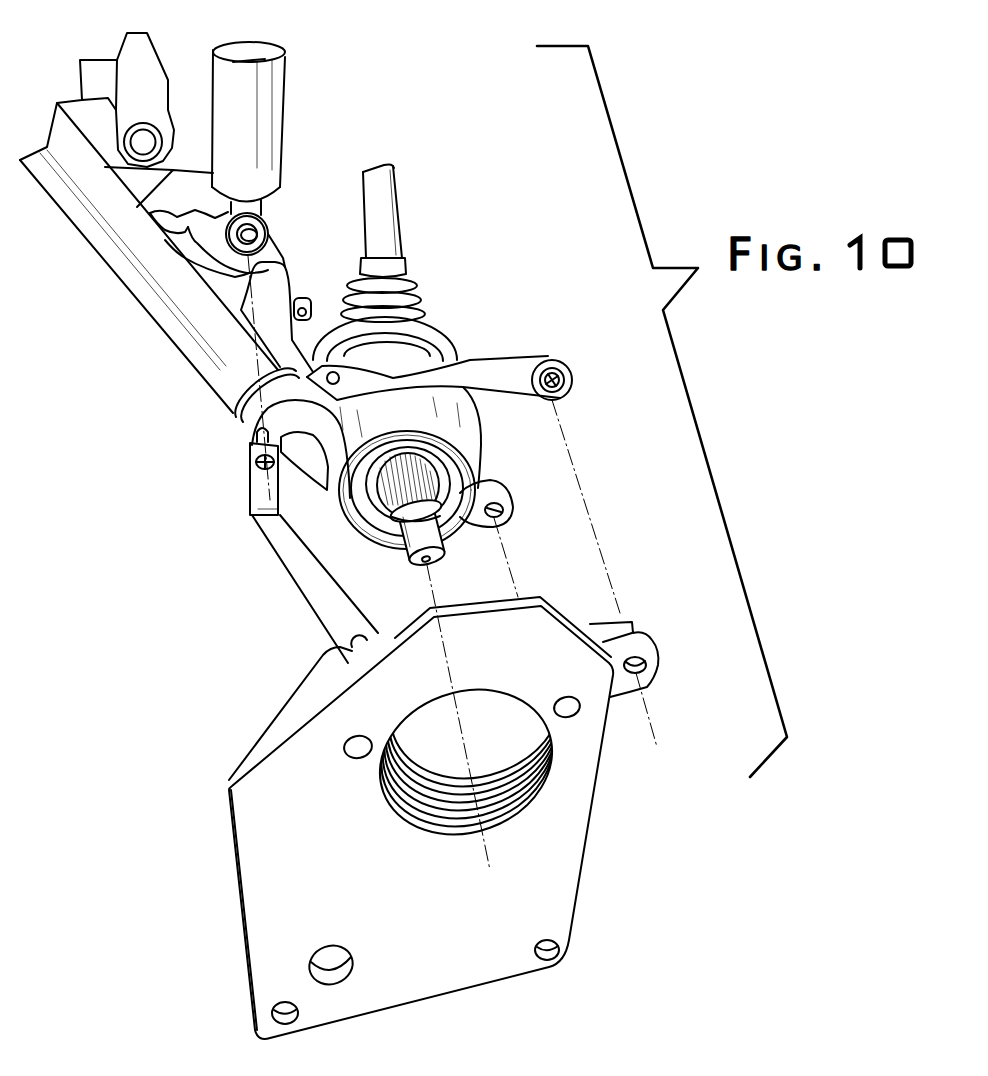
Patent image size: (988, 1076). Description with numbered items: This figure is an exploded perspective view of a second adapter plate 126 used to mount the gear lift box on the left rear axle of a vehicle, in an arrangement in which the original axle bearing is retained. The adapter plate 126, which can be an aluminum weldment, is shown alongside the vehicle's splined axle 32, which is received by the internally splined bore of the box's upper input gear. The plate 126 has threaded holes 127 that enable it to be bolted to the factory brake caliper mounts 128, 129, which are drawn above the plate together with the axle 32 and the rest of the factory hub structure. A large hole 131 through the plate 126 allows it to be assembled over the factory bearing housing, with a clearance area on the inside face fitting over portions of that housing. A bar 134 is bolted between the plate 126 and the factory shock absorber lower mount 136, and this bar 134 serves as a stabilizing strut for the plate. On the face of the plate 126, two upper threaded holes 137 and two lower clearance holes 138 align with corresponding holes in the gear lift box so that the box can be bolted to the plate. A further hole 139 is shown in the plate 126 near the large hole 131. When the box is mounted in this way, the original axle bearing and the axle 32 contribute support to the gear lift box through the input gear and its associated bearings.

The axle 32 is at (427, 535).
The adapter plate 126 is at (235, 851).
The threaded holes 127 is at (643, 667).
The factory brake caliper mount 128 is at (555, 381).
The factory brake caliper mount 129 is at (493, 511).
The large hole 131 is at (522, 760).
The bar 134 is at (310, 567).
The factory shock absorber lower mount 136 is at (218, 246).
The upper threaded holes 137 is at (346, 750).
The lower clearance holes 138 is at (450, 424).
The fastener hole 139 is at (578, 712).